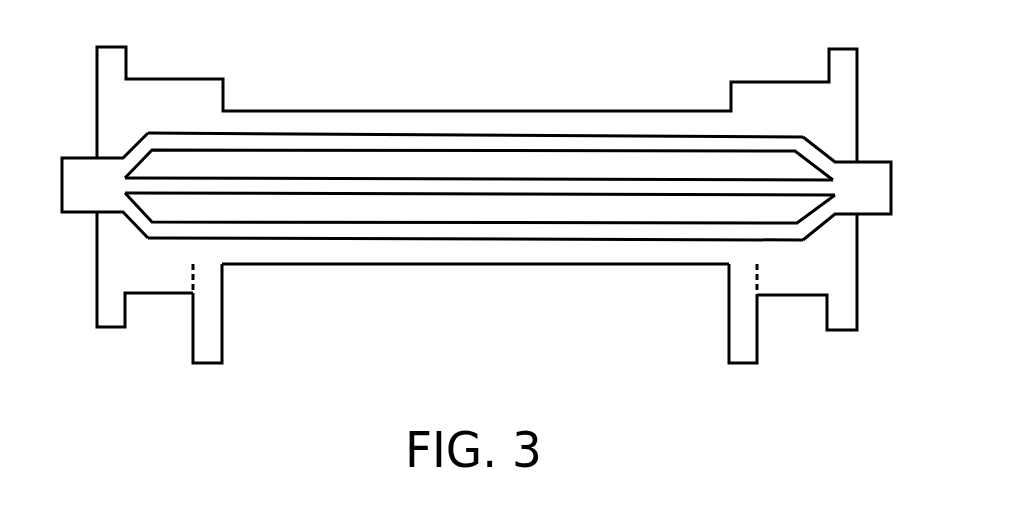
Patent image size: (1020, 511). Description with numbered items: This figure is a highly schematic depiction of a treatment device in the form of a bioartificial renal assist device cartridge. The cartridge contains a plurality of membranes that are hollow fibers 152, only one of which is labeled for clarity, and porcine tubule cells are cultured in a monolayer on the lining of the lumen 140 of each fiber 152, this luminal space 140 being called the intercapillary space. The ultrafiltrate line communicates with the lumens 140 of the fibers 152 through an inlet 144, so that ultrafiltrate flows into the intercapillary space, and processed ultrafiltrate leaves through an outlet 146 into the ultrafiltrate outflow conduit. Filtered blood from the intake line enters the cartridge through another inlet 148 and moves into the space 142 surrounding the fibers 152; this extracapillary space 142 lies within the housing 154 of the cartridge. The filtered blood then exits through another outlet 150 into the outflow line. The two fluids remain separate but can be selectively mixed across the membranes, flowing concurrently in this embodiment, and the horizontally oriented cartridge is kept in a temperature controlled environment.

The lumen 140 is at (313, 232).
The space surrounding the fibers 142 is at (532, 212).
The inlet 144 is at (77, 167).
The outlet 146 is at (878, 170).
The inlet 148 is at (208, 338).
The outlet 150 is at (735, 342).
The hollow fibers 152 is at (410, 133).
The housing 154 is at (188, 79).